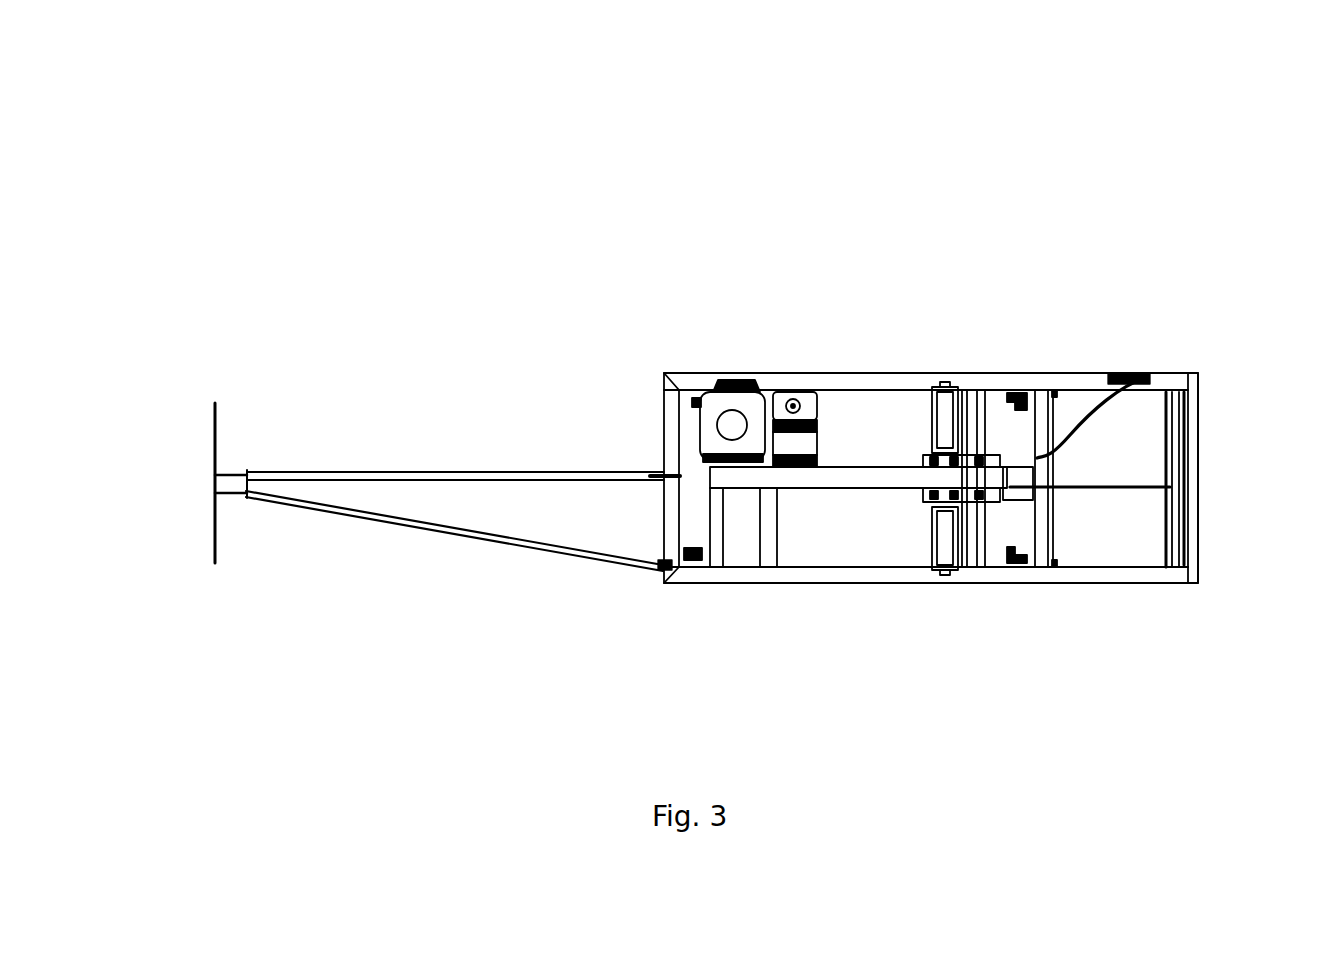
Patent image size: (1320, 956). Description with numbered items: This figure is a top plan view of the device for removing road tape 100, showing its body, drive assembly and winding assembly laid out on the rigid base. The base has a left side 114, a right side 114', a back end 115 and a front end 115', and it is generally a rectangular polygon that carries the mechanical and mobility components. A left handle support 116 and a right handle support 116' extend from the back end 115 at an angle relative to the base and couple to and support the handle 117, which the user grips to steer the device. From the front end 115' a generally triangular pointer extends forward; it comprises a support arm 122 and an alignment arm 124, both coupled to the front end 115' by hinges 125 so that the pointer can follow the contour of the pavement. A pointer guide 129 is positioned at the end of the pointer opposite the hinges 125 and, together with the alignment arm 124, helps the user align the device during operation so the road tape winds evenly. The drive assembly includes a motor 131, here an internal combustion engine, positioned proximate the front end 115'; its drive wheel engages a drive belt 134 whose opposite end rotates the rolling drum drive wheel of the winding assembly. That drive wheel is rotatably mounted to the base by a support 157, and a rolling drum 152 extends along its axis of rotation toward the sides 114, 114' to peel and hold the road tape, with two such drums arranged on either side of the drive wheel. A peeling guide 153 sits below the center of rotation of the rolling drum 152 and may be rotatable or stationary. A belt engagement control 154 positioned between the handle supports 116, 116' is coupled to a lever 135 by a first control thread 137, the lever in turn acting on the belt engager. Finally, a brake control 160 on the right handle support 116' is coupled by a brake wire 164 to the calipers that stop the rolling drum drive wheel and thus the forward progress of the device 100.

The device for removing road tape 100 is at (258, 136).
The pointer guide 129 is at (211, 429).
The support arm 122 is at (402, 475).
The alignment arm 124 is at (443, 538).
The hinges 125 is at (658, 465).
The left side 114 is at (931, 514).
The right side 114' is at (843, 332).
The front end 115' is at (629, 368).
The right handle support 116' is at (998, 429).
The back end 115 is at (1079, 517).
The left handle support 116 is at (1144, 606).
The motor 131 is at (745, 378).
The drive belt 134 is at (858, 477).
The support 157 is at (927, 502).
The rolling drum 152 is at (937, 577).
The peeling guide 153 is at (977, 575).
The lever 135 is at (1040, 487).
The first control thread 137 is at (1141, 485).
The brake control 160 is at (1133, 380).
The brake wire 164 is at (1090, 412).
The belt engagement control 154 is at (1175, 430).
The handle 117 is at (1187, 458).